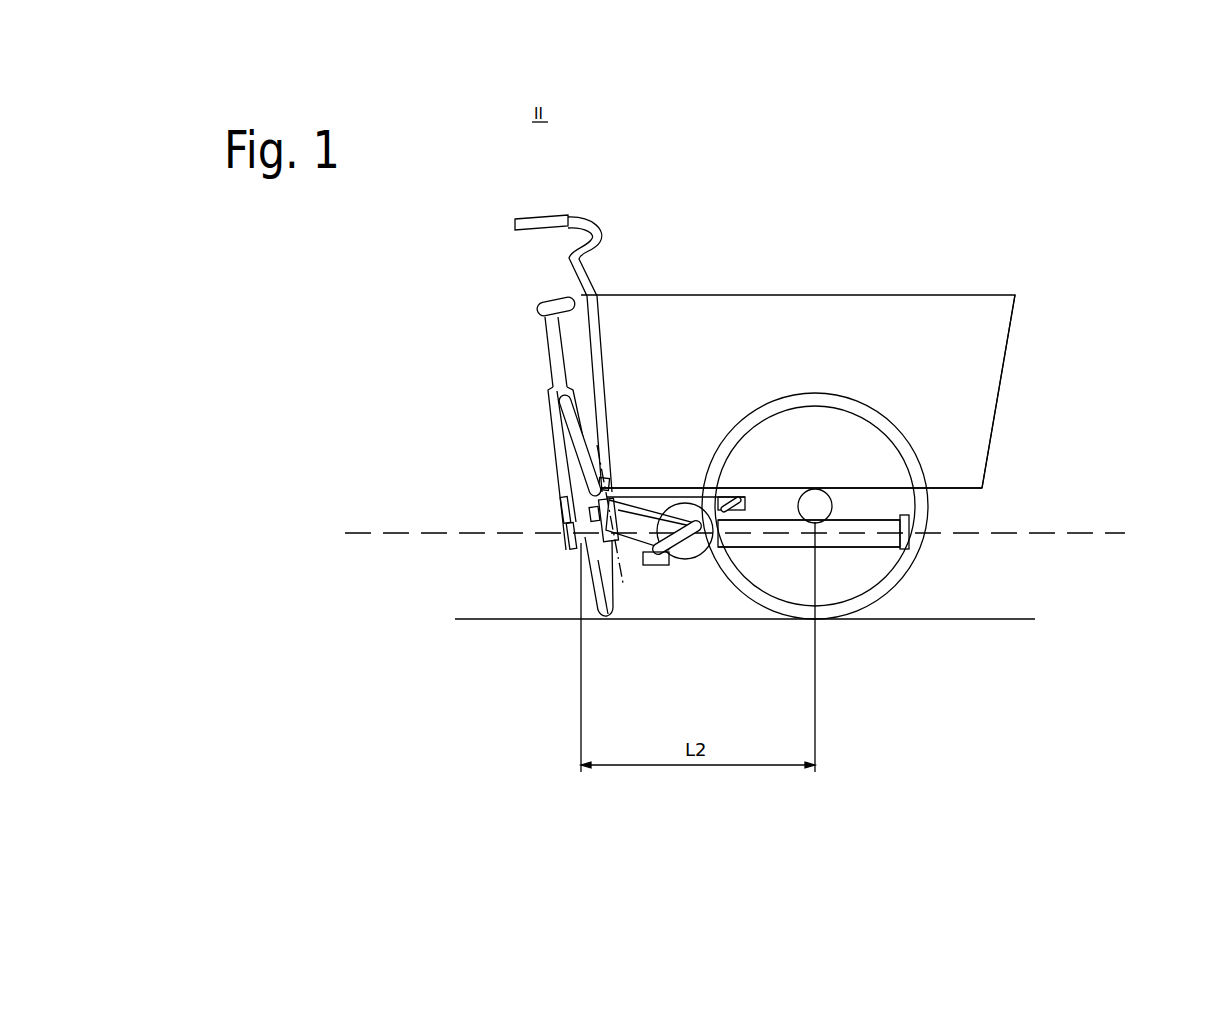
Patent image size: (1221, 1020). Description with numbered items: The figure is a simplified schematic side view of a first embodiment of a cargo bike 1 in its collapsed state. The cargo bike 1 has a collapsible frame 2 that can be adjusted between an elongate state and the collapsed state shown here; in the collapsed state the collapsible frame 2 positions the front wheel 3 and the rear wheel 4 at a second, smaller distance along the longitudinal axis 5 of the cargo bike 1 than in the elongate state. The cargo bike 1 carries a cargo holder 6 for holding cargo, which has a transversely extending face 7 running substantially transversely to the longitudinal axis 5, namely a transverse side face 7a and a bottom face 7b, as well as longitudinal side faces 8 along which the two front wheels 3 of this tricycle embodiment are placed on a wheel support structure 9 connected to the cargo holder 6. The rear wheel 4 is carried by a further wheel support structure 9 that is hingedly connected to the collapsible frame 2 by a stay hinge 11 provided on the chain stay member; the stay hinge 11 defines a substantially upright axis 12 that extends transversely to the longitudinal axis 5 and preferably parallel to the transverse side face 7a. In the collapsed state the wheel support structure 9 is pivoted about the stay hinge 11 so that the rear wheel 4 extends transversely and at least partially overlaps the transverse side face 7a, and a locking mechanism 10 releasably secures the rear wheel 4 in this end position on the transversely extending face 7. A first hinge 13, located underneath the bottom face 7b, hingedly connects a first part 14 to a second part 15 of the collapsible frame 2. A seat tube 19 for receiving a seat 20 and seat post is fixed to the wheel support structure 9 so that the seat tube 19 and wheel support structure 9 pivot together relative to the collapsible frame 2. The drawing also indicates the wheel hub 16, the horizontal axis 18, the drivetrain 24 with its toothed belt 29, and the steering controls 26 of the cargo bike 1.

The cargo bike 1 is at (851, 188).
The collapsible frame 2 is at (635, 540).
The front wheel 3 is at (928, 567).
The rear wheel 4 is at (580, 598).
The longitudinal axis 5 is at (762, 508).
The cargo holder 6 is at (935, 292).
The transversely extending face of cargo holder 7 is at (598, 392).
The transverse side face of cargo holder 7a is at (1005, 370).
The bottom face of cargo holder 7b is at (952, 497).
The longitudinal side face of cargo holder 8 is at (778, 364).
The wheel support structure 9 is at (544, 442).
The locking mechanism 10 is at (600, 490).
The stay hinge 11 is at (616, 612).
The upright axis 12 is at (620, 576).
The first hinge 13 is at (890, 560).
The first part of collapsible frame 14 is at (862, 515).
The second part of collapsible frame 15 is at (845, 559).
The wheel hub 16 is at (558, 529).
The horizontal axis 18 is at (1113, 533).
The seat tube 19 is at (550, 355).
The seat 20 is at (560, 314).
The drivetrain 24 is at (684, 572).
The steering controls 26 is at (506, 220).
The toothed belt 29 is at (670, 567).